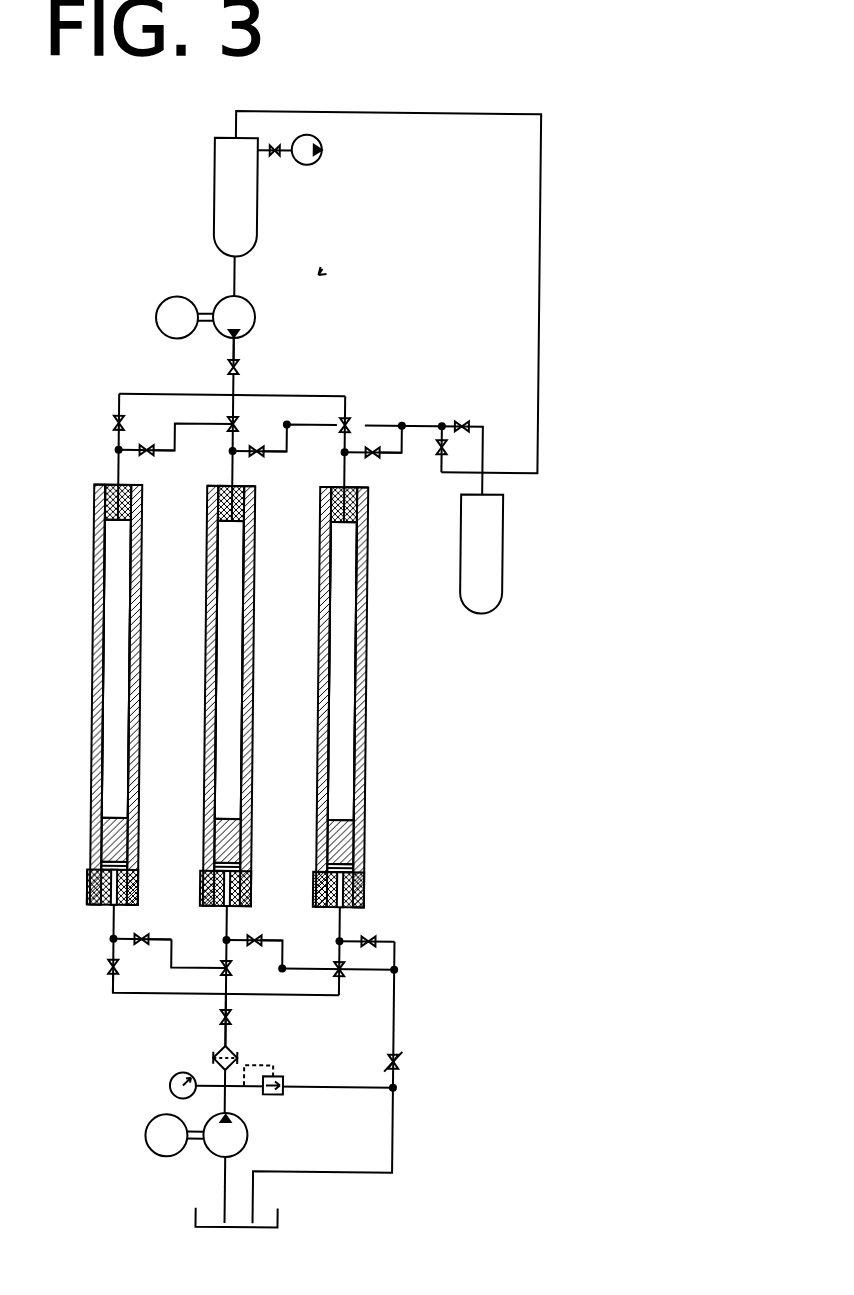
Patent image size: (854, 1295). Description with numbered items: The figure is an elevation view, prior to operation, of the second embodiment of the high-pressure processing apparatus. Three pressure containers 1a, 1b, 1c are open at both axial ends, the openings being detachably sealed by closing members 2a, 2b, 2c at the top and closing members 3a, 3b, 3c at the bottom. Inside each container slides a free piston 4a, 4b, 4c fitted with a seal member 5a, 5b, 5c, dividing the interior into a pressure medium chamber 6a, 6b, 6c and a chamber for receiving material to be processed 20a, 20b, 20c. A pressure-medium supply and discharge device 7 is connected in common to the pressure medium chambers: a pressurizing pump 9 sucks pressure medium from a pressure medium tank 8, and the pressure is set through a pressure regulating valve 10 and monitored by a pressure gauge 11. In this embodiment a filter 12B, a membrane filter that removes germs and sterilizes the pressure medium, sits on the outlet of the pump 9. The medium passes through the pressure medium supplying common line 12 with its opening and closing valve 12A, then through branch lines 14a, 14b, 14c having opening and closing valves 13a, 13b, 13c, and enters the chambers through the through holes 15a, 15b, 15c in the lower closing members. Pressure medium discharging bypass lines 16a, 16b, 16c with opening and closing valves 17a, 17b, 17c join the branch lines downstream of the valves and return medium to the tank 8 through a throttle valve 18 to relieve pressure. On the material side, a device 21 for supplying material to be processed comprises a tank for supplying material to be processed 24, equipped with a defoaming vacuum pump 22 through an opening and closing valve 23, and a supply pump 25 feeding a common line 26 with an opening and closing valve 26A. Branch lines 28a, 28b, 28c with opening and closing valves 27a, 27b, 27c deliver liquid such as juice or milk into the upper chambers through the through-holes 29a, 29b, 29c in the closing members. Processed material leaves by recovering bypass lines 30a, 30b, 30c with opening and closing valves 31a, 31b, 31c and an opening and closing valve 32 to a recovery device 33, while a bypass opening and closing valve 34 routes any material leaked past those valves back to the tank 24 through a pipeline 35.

The pressure container 1a is at (140, 602).
The pressure container 1b is at (253, 606).
The pressure container 1c is at (366, 616).
The closing member 2a is at (104, 524).
The closing member 2b is at (231, 503).
The closing member 2c is at (355, 518).
The closing member 3a is at (140, 896).
The closing member 3b is at (253, 896).
The closing member 3c is at (366, 896).
The free piston 4a is at (128, 812).
The free piston 4b is at (241, 812).
The free piston 4c is at (354, 812).
The seal member 5a is at (126, 840).
The seal member 5b is at (240, 840).
The seal member 5c is at (352, 840).
The pressure medium chamber 6a is at (130, 867).
The pressure medium chamber 6b is at (243, 867).
The pressure medium chamber 6c is at (356, 867).
The pressure-medium supply and discharge device 7 is at (400, 1152).
The pressure medium tank 8 is at (283, 1217).
The pressurizing pump 9 is at (212, 1153).
The pressure regulating valve 10 is at (287, 1096).
The pressure gauge 11 is at (174, 1086).
The pressure medium supplying common line 12 is at (224, 1050).
The opening and closing valve 12A is at (236, 1052).
The filter 12B is at (217, 1058).
The opening and closing valve 13a is at (110, 968).
The opening and closing valve 13b is at (226, 976).
The opening and closing valve 13c is at (346, 976).
The branch line 14a is at (116, 928).
The branch line 14b is at (201, 952).
The branch line 14c is at (340, 925).
The through hole 15a is at (92, 880).
The through hole 15b is at (150, 945).
The through hole 15c is at (340, 922).
The pressure medium discharging bypass line 16a is at (114, 980).
The pressure medium discharging bypass line 16b is at (238, 1012).
The pressure medium discharging bypass line 16c is at (372, 935).
The opening and closing valve 17a is at (147, 946).
The opening and closing valve 17b is at (262, 925).
The opening and closing valve 17c is at (397, 952).
The throttle valve 18 is at (404, 1058).
The chamber for receiving material to be processed 20a is at (114, 600).
The chamber for receiving material to be processed 20b is at (224, 572).
The chamber for receiving material to be processed 20c is at (355, 570).
The device for supplying material to be processed 21 is at (318, 268).
The defoaming vacuum pump 22 is at (317, 150).
The opening and closing valve 23 is at (270, 158).
The tank for supplying material to be processed 24 is at (252, 242).
The supply pump 25 is at (250, 302).
The common line 26 is at (236, 372).
The opening and closing valve 26A is at (236, 362).
The opening and closing valve 27a is at (112, 420).
The opening and closing valve 27b is at (232, 415).
The opening and closing valve 27c is at (344, 415).
The branch line 28a is at (112, 452).
The branch line 28b is at (228, 440).
The branch line 28c is at (342, 460).
The through-hole 29a is at (103, 497).
The through-hole 29b is at (216, 512).
The through-hole 29c is at (335, 527).
The recovering bypass line 30a is at (146, 453).
The recovering bypass line 30b is at (258, 455).
The recovering bypass line 30c is at (370, 455).
The opening and closing valve 31a is at (144, 444).
The opening and closing valve 31b is at (262, 445).
The opening and closing valve 31c is at (380, 453).
The opening and closing valve 32 is at (459, 420).
The recovery device 33 is at (480, 611).
The opening and closing valve 34 is at (437, 438).
The pipeline 35 is at (535, 388).